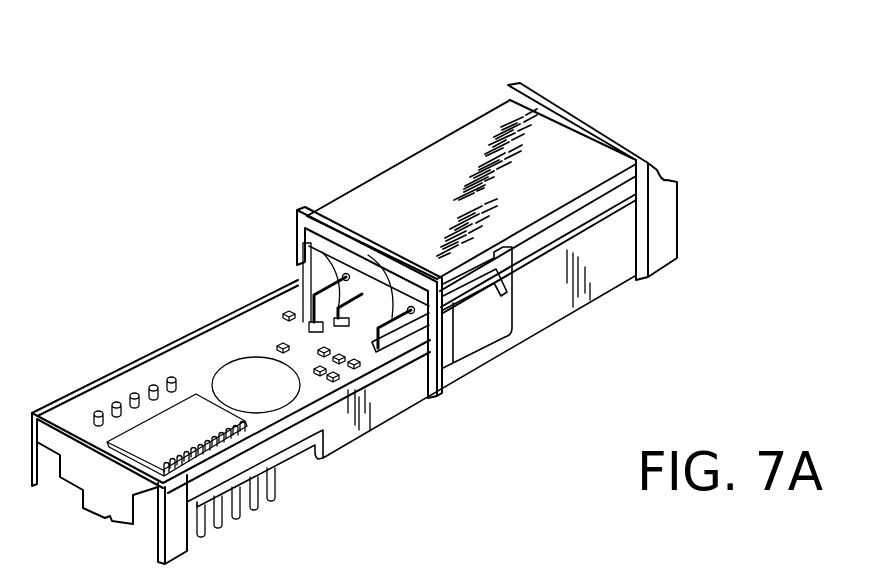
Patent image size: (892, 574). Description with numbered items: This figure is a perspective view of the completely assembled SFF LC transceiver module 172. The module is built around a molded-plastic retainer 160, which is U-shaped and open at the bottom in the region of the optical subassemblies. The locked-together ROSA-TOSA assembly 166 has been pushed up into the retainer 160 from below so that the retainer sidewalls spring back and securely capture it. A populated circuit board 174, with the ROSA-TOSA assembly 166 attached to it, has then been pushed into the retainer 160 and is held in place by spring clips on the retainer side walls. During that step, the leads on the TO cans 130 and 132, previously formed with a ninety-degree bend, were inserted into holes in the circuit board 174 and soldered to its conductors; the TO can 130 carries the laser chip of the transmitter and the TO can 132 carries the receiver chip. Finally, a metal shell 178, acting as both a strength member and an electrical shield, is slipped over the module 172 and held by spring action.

The TO can 130 is at (411, 313).
The TO can 132 is at (337, 297).
The retainer 160 is at (554, 307).
The ROSA-TOSA assembly 166 is at (328, 231).
The SFF LC transceiver module 172 is at (659, 122).
The circuit board 174 is at (228, 338).
The metal shell 178 is at (388, 169).